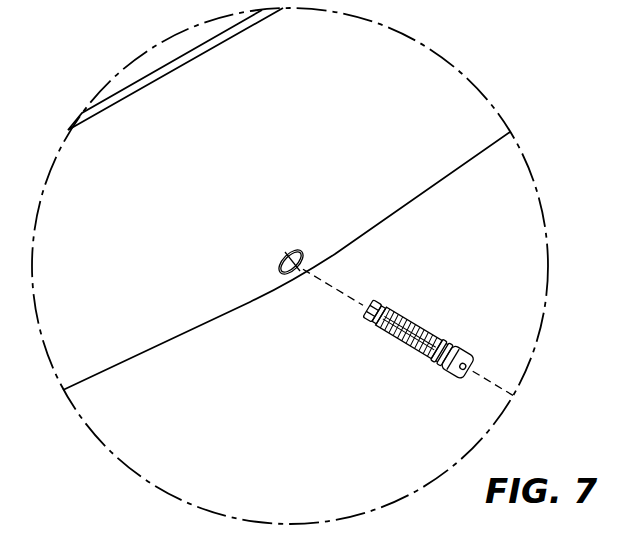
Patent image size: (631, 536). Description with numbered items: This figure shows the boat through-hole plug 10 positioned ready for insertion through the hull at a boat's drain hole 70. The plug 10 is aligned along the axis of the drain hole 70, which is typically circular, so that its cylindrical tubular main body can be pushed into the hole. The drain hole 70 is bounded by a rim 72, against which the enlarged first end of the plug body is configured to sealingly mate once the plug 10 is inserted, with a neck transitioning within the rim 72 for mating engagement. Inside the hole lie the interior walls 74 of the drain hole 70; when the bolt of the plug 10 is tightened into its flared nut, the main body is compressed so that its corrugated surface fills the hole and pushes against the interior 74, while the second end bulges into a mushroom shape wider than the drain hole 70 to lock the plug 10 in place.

The boat through-hole plug 10 is at (410, 366).
The drain hole 70 is at (278, 261).
The rim 72 is at (303, 249).
The interior walls of the drain hole 74 is at (289, 250).